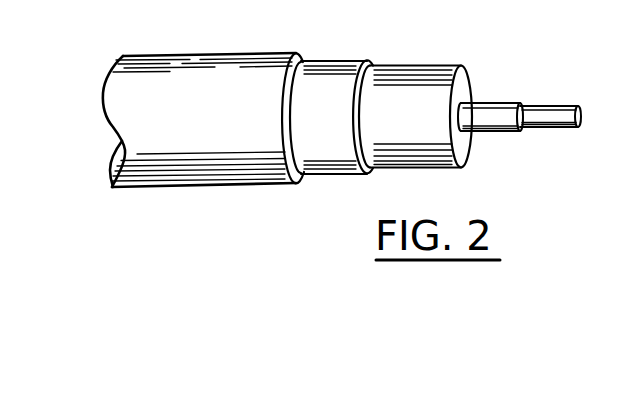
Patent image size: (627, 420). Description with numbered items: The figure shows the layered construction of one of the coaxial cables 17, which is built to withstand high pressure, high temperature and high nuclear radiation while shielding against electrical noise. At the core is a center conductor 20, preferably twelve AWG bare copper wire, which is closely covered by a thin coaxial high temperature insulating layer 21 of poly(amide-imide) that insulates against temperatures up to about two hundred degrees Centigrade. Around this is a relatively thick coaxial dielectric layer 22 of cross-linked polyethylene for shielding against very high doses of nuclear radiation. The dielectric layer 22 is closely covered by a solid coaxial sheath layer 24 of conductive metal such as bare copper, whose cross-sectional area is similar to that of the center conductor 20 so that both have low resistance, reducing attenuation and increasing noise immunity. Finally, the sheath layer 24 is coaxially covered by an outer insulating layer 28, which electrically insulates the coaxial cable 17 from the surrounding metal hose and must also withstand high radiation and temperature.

The coaxial cable 17 is at (266, 191).
The center conductor 20 is at (578, 106).
The insulating layer 21 is at (508, 103).
The dielectric layer 22 is at (430, 65).
The sheath layer 24 is at (347, 59).
The outer insulating layer 28 is at (243, 55).